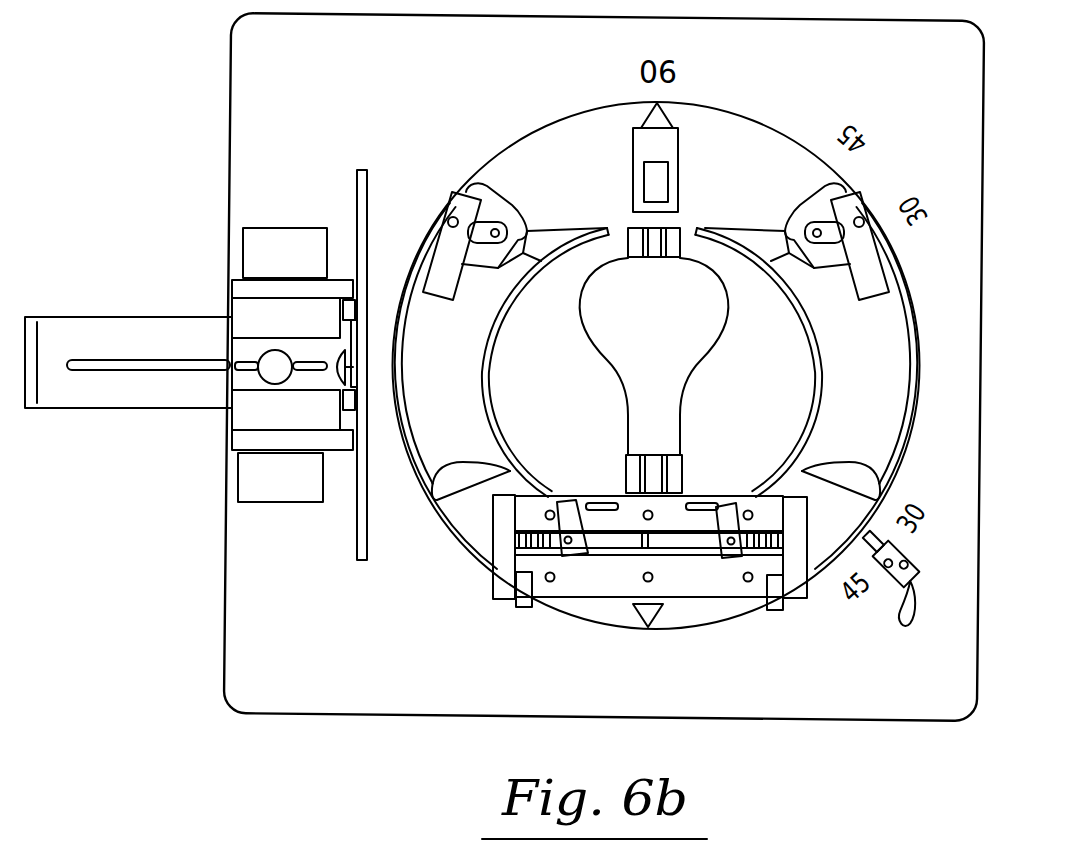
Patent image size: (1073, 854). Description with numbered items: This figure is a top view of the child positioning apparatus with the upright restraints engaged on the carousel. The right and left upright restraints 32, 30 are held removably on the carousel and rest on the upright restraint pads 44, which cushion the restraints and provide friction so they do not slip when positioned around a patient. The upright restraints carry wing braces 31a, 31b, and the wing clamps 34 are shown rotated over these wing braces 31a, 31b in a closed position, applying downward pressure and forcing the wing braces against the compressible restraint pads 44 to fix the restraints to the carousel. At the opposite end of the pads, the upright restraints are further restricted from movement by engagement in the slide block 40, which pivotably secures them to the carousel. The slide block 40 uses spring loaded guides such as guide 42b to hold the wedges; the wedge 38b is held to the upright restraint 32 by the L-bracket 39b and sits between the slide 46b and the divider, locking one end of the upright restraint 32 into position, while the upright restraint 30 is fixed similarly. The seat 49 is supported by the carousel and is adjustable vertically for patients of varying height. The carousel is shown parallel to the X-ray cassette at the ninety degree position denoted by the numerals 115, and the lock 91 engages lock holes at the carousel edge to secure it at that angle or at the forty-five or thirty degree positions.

The left upright restraint 30 is at (810, 339).
The upright restraint wing brace 31a is at (867, 323).
The upright restraint wing brace 31b is at (413, 317).
The right upright restraint 32 is at (502, 326).
The wing clamp 34 is at (460, 197).
The wedge 38b is at (591, 535).
The L-bracket 39b is at (578, 502).
The slide block 40 is at (795, 613).
The spring loaded guide 42b is at (523, 607).
The upright restraint pad 44 is at (456, 489).
The slide 46b is at (514, 548).
The seat 49 is at (688, 362).
The lock 91 is at (916, 566).
The ninety degree angle numerals 115 is at (667, 672).